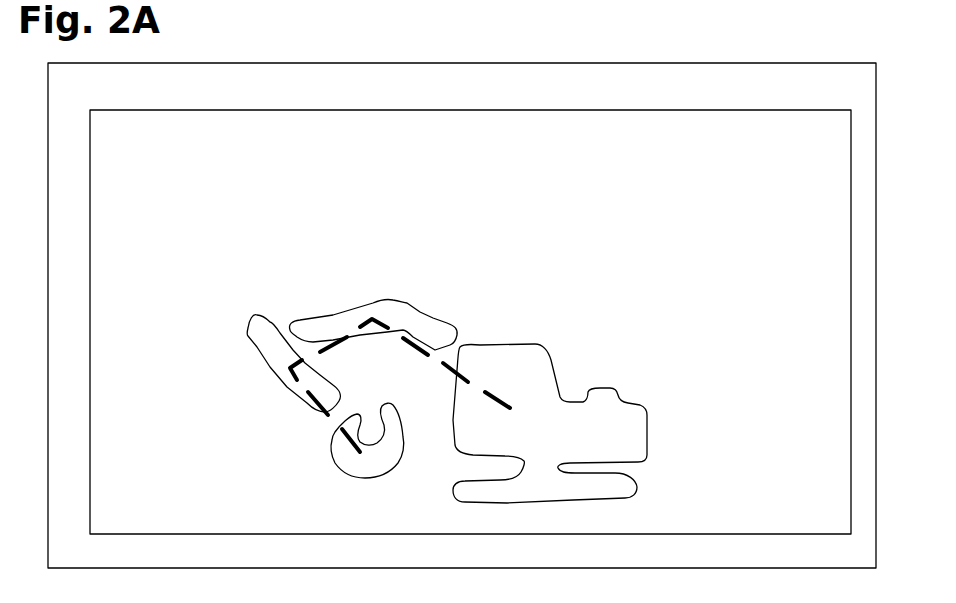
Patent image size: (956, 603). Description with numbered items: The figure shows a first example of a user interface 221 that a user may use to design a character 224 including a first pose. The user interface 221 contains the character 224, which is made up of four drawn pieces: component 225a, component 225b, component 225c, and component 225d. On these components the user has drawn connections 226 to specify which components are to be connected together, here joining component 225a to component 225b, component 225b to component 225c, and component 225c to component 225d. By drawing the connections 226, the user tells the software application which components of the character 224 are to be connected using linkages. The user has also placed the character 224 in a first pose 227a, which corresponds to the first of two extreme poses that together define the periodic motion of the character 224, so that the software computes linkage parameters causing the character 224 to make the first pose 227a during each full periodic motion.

The user interface 221 is at (553, 96).
The character 224 is at (542, 141).
The component 225a is at (657, 378).
The component 225b is at (422, 292).
The component 225c is at (267, 391).
The component 225d is at (332, 482).
The connections 226 is at (402, 356).
The first pose 227a is at (757, 207).